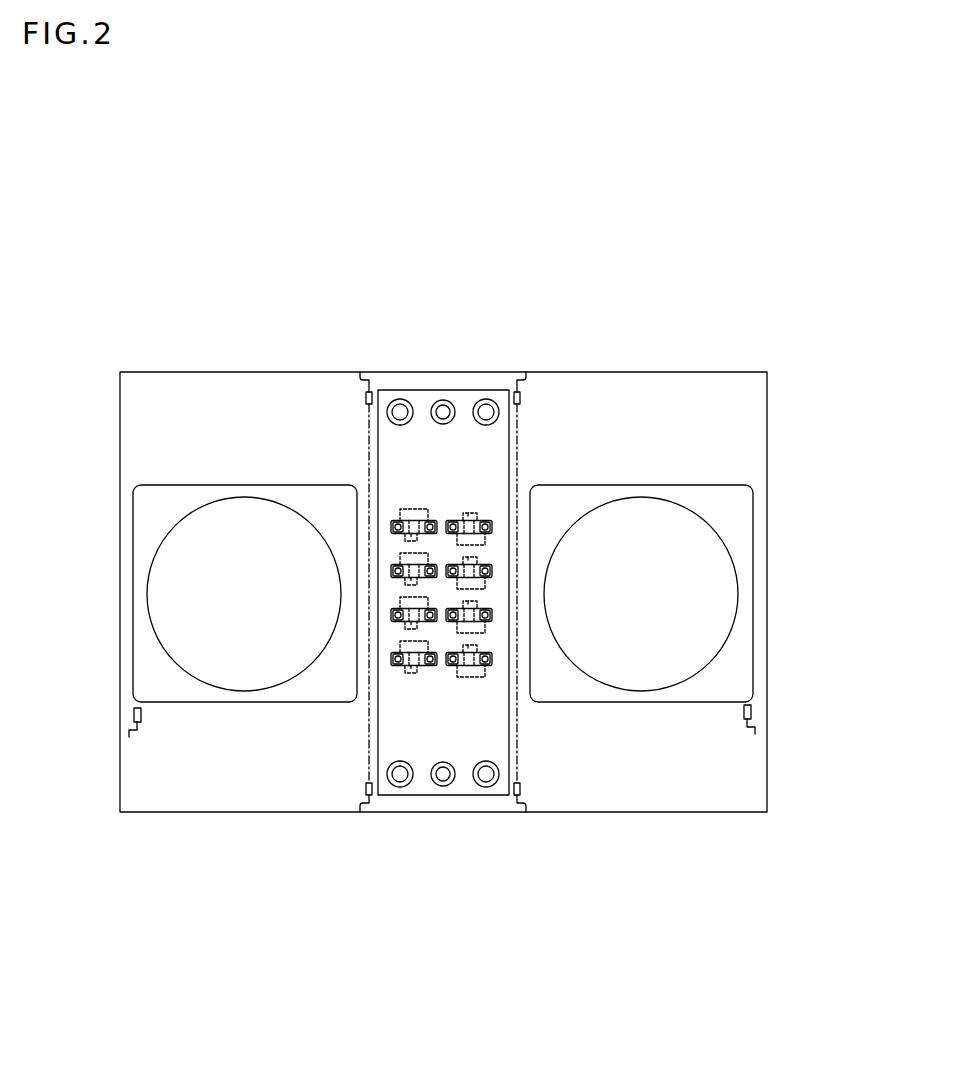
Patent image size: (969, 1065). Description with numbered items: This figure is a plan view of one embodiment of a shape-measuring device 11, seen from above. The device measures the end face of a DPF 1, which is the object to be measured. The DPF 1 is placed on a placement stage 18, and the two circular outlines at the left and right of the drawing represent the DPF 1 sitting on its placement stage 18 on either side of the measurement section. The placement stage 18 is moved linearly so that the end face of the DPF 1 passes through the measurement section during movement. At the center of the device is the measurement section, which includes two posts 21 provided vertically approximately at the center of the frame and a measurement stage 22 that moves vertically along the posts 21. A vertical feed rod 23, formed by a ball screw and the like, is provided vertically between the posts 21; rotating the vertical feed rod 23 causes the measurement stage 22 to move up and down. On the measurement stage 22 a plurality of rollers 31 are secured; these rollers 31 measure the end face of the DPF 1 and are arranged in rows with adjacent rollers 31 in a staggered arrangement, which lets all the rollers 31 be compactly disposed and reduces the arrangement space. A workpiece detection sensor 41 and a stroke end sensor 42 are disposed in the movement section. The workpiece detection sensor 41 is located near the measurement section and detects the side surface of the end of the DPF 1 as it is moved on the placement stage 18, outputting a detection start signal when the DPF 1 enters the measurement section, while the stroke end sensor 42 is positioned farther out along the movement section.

The shape-measuring device 11 is at (586, 353).
The measurement stage 22 is at (500, 445).
The posts 21 is at (486, 399).
The vertical feed rod 23 is at (443, 400).
The rollers 31 is at (414, 509).
The placement stage 18 is at (132, 533).
The DPF 1 is at (147, 592).
The stroke end sensor 42 is at (134, 713).
The workpiece detection sensor 41 is at (366, 789).